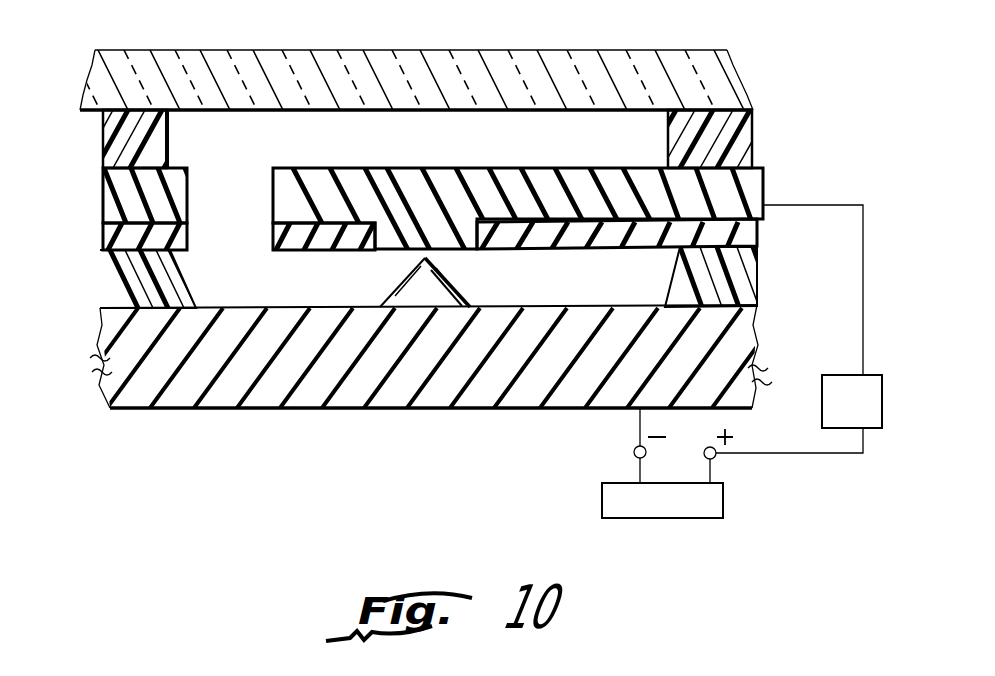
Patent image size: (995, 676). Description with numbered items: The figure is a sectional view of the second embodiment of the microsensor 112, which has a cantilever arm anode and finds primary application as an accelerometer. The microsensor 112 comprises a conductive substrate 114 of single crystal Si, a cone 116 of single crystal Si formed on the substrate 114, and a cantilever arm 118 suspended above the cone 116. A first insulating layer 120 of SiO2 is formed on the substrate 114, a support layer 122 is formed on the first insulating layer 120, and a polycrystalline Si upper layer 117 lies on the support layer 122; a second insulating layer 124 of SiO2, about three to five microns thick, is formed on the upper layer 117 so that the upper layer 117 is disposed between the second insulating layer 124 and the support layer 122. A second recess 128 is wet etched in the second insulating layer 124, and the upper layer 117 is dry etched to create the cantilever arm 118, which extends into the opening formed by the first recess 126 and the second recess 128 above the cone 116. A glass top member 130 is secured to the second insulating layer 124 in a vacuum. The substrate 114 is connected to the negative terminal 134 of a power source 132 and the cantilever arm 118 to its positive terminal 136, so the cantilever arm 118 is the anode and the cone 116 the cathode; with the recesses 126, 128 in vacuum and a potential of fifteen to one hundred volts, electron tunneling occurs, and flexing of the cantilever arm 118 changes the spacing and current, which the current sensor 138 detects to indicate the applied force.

The microsensor 112 is at (246, 434).
The conductive substrate 114 is at (193, 388).
The cone 116 is at (456, 283).
The upper layer 117 is at (122, 200).
The cantilever arm 118 is at (270, 216).
The first insulating layer 120 is at (128, 287).
The support layer 122 is at (112, 232).
The second insulating layer 124 is at (112, 140).
The first recess 126 is at (310, 295).
The second recess 128 is at (494, 153).
The top member 130 is at (422, 82).
The power source 132 is at (677, 515).
The negative terminal 134 is at (633, 453).
The positive terminal 136 is at (718, 459).
The current sensor 138 is at (856, 414).